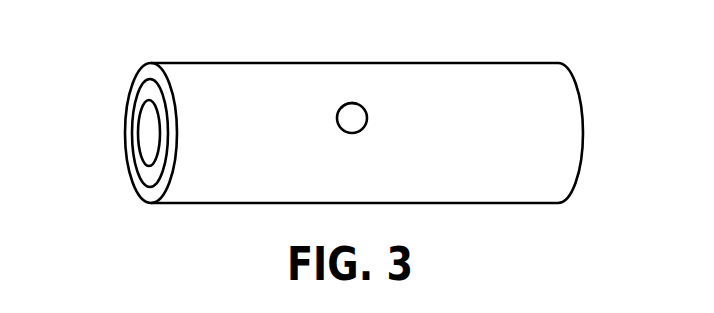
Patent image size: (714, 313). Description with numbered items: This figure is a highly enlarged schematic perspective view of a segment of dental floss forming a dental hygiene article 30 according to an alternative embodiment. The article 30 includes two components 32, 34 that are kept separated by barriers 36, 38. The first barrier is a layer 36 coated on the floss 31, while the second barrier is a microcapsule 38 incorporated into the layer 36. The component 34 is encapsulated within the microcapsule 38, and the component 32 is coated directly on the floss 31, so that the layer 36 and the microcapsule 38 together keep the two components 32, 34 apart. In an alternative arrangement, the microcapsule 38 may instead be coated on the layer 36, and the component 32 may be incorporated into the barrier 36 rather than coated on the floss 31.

The dental hygiene article 30 is at (442, 43).
The floss 31 is at (150, 122).
The component 32 is at (145, 173).
The component 34 is at (345, 120).
The layer 36 is at (150, 195).
The microcapsule 38 is at (362, 100).